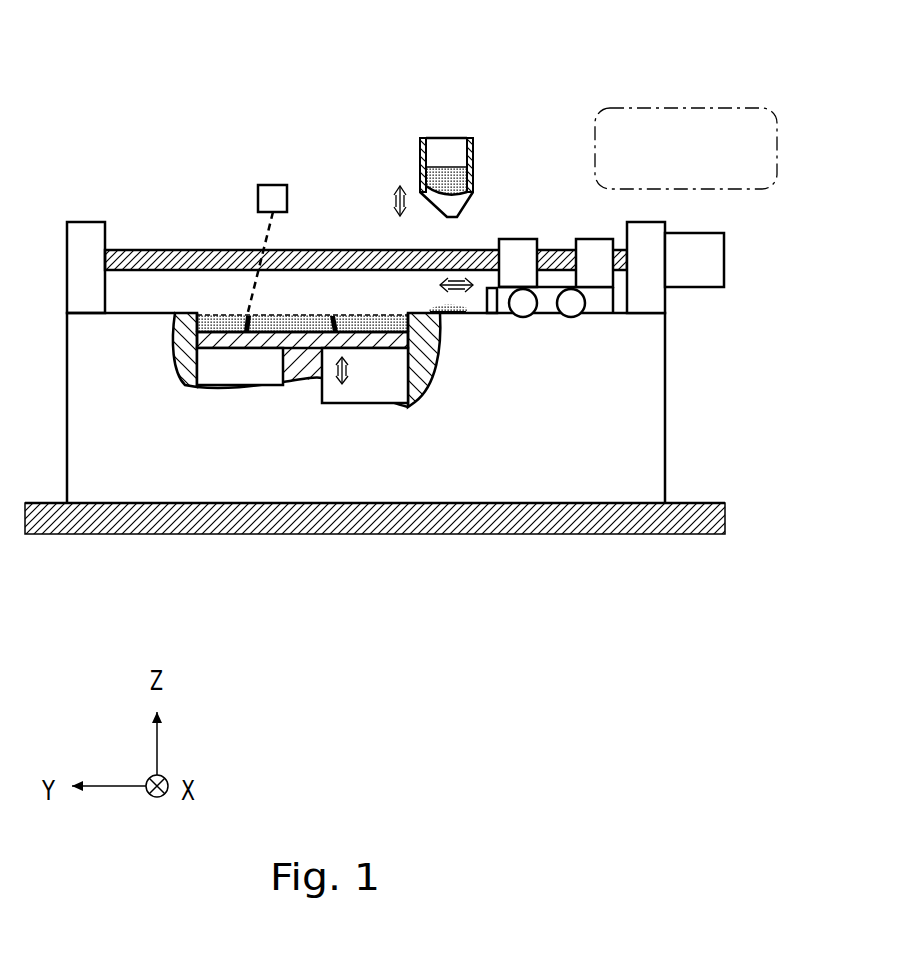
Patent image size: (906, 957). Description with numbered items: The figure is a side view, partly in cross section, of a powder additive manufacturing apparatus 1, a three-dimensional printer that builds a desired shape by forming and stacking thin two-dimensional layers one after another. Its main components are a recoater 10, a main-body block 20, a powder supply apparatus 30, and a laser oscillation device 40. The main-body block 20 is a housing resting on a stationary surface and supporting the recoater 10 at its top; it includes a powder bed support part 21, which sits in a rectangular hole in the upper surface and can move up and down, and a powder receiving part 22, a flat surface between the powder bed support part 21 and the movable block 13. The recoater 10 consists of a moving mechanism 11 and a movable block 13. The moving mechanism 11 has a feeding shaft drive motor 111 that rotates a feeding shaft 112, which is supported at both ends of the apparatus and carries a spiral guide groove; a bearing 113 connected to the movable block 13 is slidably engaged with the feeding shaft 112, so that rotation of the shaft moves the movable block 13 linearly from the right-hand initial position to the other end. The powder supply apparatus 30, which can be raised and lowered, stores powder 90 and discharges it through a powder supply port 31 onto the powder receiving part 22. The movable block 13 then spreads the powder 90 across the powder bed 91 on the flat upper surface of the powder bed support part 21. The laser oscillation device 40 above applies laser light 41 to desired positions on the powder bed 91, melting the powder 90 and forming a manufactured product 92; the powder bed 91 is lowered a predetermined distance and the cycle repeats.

The powder additive manufacturing apparatus 1 is at (157, 83).
The recoater 10 is at (740, 249).
The moving mechanism 11 is at (682, 108).
The feeding shaft drive motor 111 is at (698, 233).
The feeding shaft 112 is at (565, 252).
The bearing 113 is at (605, 240).
The movable block 13 is at (523, 287).
The main-body block 20 is at (740, 351).
The powder bed support part 21 is at (370, 352).
The powder receiving part 22 is at (453, 315).
The powder supply apparatus 30 is at (470, 140).
The powder supply port 31 is at (460, 234).
The laser oscillation device 40 is at (282, 185).
The laser light 41 is at (256, 234).
The powder 90 is at (444, 167).
The powder bed 91 is at (212, 315).
The manufactured product 92 is at (249, 315).